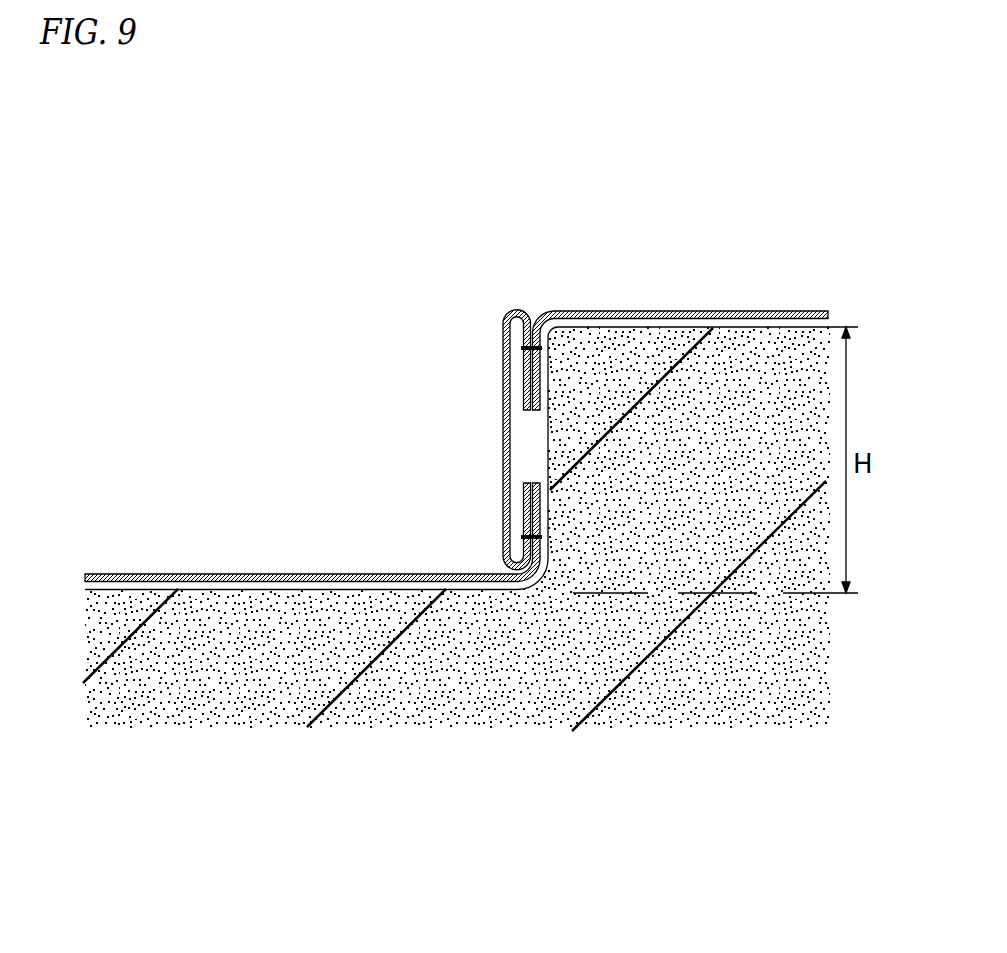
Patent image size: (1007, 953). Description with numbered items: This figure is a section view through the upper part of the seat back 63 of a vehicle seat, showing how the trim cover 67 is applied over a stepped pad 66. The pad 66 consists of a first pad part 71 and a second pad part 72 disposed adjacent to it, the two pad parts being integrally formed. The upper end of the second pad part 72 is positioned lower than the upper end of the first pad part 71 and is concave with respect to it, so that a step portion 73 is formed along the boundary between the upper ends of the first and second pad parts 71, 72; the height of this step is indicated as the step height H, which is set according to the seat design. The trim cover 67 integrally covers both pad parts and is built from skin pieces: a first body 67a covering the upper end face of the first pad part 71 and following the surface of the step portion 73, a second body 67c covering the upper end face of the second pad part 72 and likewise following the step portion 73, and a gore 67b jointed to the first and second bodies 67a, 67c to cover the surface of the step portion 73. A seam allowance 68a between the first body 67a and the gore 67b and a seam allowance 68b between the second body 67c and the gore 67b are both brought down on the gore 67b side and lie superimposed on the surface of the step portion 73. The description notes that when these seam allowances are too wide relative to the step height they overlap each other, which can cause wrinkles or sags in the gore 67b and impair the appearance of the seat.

The seat back 63 is at (230, 180).
The pad 66 is at (470, 618).
The trim cover 67 is at (456, 395).
The first body 67a is at (598, 312).
The gore 67b is at (503, 360).
The second body 67c is at (398, 572).
The seam allowance 68a is at (526, 391).
The seam allowance 68b is at (526, 505).
The first pad part 71 is at (620, 720).
The second pad part 72 is at (453, 717).
The step portion 73 is at (548, 443).